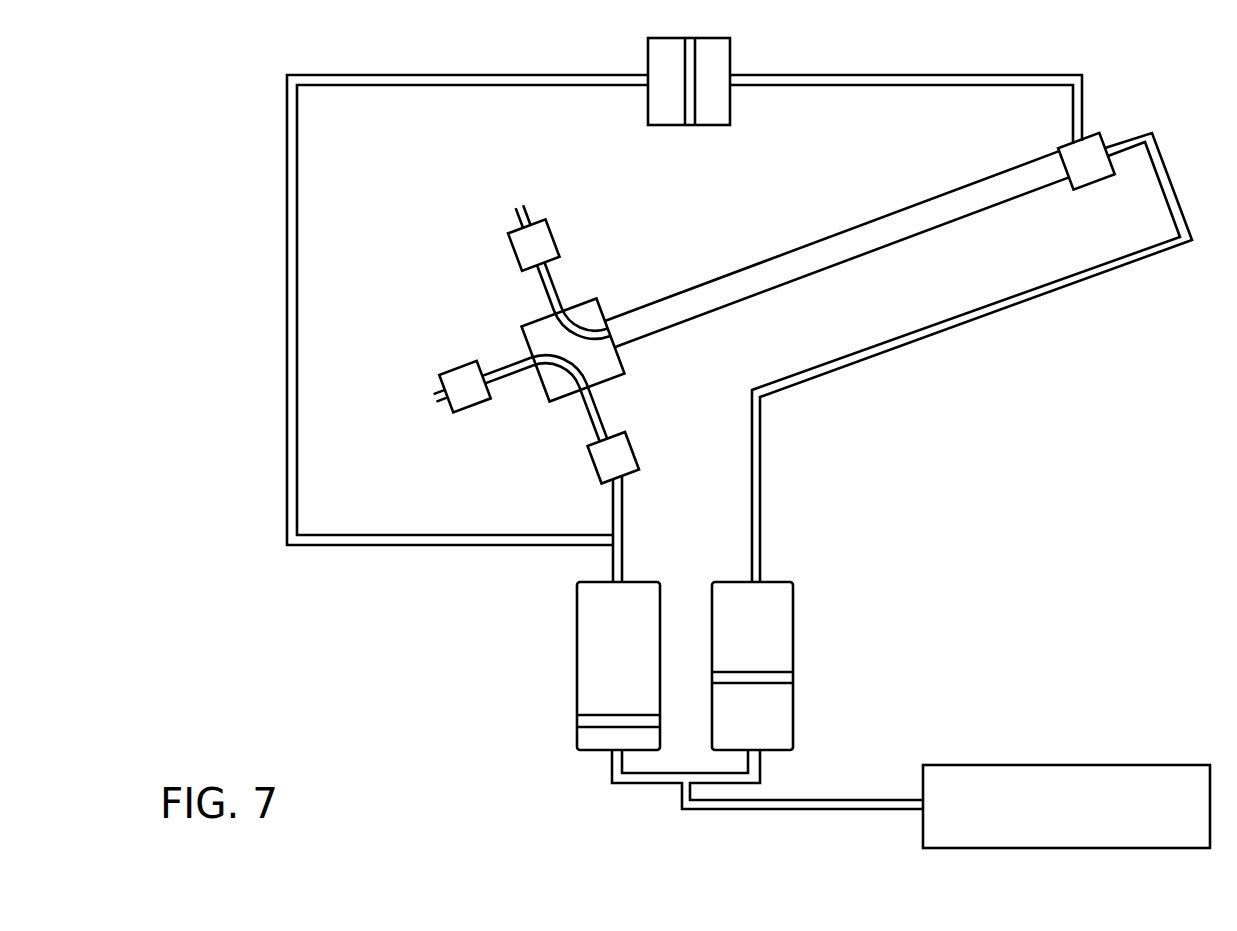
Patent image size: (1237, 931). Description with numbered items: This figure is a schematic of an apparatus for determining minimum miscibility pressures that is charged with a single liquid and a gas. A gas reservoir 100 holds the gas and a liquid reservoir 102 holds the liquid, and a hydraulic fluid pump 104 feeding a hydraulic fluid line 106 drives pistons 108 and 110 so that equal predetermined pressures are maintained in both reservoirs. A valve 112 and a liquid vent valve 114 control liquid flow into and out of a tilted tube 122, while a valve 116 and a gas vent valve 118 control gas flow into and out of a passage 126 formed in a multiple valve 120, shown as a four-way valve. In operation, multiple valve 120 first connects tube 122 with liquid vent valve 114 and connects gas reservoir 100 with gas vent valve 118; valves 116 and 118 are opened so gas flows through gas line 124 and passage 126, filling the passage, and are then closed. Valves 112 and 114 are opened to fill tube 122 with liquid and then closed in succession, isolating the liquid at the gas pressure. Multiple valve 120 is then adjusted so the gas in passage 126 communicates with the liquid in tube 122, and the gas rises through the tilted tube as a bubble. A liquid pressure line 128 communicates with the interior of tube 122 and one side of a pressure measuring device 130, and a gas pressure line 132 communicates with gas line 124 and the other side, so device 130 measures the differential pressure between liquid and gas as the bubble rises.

The gas reservoir 100 is at (633, 629).
The liquid reservoir 102 is at (773, 629).
The hydraulic fluid pump 104 is at (1047, 824).
The hydraulic fluid line 106 is at (682, 795).
The piston 108 is at (577, 718).
The piston 110 is at (783, 678).
The valve 112 is at (1098, 183).
The liquid vent valve 114 is at (516, 252).
The valve 116 is at (628, 442).
The gas vent valve 118 is at (473, 406).
The multiple valve 120 is at (531, 323).
The tube 122 is at (738, 271).
The gas line 124 is at (623, 543).
The passage 126 is at (561, 374).
The liquid pressure line 128 is at (897, 74).
The pressure measuring device 130 is at (733, 53).
The gas pressure line 132 is at (456, 74).